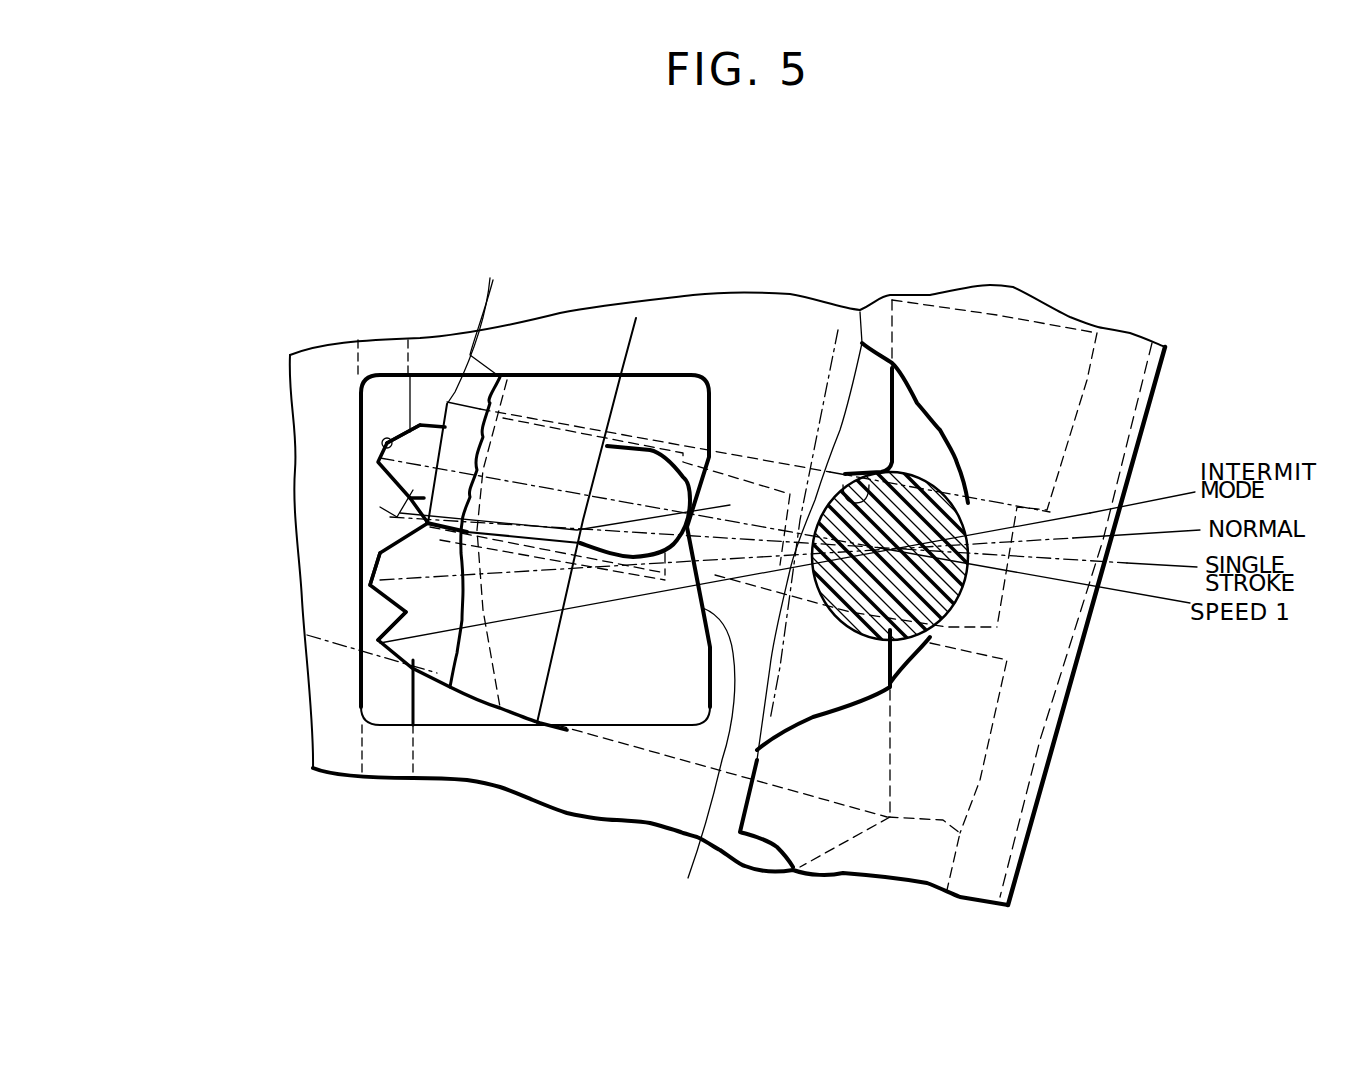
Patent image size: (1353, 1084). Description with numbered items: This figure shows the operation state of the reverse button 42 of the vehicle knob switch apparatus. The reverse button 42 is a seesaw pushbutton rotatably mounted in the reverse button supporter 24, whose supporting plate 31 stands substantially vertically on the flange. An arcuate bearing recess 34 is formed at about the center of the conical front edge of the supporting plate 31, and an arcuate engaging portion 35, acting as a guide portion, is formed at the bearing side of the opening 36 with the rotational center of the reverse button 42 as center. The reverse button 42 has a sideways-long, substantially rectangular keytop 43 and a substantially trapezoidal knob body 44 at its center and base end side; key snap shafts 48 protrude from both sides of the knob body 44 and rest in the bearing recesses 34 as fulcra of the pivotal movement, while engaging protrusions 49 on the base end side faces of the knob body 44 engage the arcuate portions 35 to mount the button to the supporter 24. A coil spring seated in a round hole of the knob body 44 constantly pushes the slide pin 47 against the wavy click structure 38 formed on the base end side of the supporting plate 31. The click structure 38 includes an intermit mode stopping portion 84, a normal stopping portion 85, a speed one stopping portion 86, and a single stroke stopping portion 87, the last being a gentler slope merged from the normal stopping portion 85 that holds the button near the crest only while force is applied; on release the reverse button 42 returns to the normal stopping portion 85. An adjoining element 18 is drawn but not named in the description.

The switch housing 18 is at (692, 332).
The reverse button supporter 24 is at (781, 309).
The supporting plate 31 is at (755, 437).
The bearing recess 34 is at (868, 470).
The arcuate engaging portion 35 is at (705, 761).
The opening 36 is at (443, 707).
The click structure 38 is at (357, 571).
The reverse button 42 is at (1032, 822).
The keytop 43 is at (1047, 737).
The knob body 44 is at (613, 687).
The slide pin 47 is at (447, 500).
The key snap shaft 48 is at (903, 513).
The engaging protrusion 49 is at (638, 470).
The intermit mode stopping portion 84 is at (310, 628).
The normal stopping portion 85 is at (380, 553).
The speed 1 stopping portion 86 is at (382, 441).
The single stroke stopping portion 87 is at (395, 508).